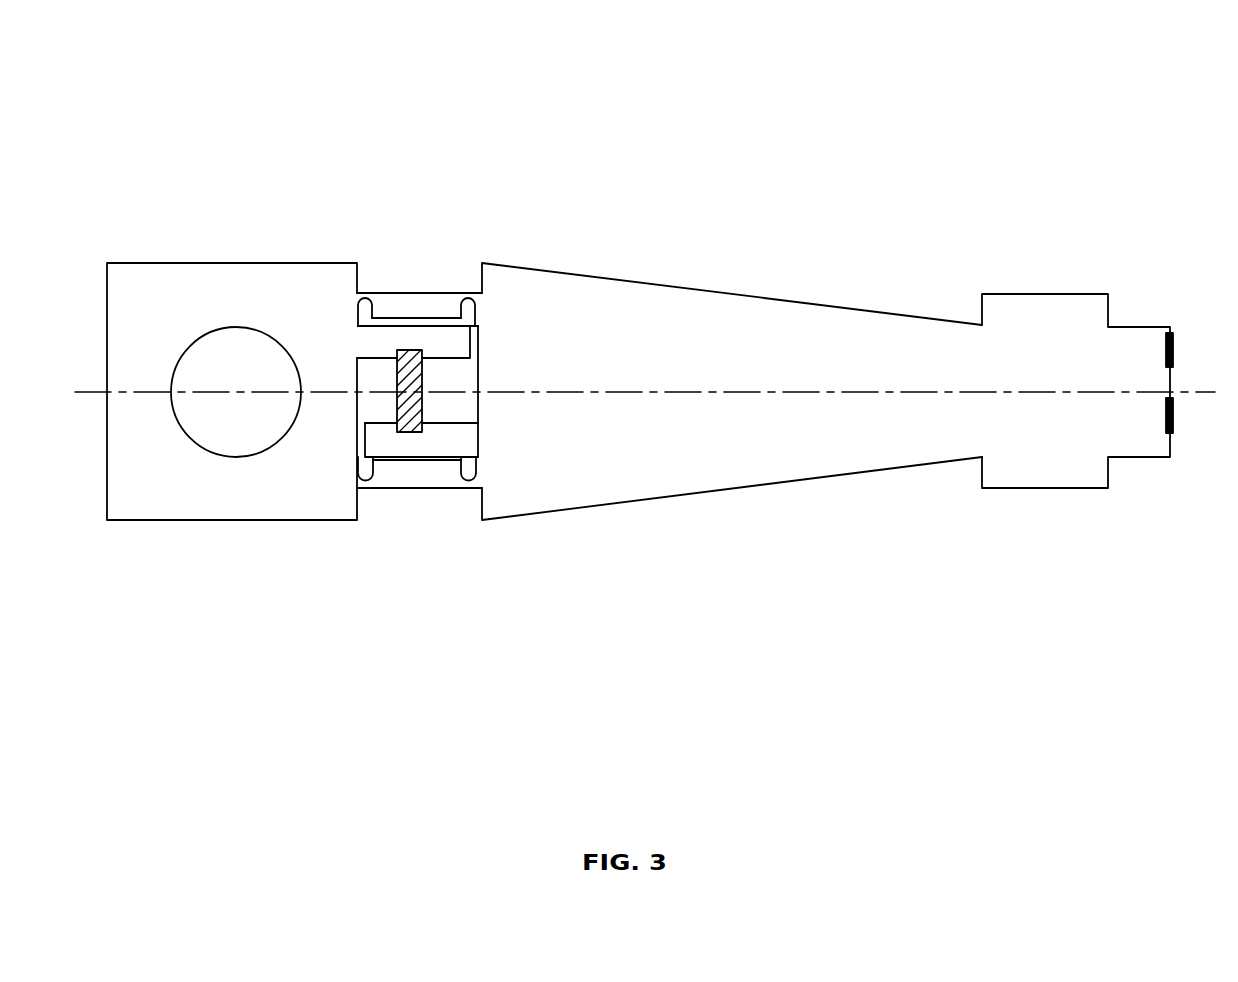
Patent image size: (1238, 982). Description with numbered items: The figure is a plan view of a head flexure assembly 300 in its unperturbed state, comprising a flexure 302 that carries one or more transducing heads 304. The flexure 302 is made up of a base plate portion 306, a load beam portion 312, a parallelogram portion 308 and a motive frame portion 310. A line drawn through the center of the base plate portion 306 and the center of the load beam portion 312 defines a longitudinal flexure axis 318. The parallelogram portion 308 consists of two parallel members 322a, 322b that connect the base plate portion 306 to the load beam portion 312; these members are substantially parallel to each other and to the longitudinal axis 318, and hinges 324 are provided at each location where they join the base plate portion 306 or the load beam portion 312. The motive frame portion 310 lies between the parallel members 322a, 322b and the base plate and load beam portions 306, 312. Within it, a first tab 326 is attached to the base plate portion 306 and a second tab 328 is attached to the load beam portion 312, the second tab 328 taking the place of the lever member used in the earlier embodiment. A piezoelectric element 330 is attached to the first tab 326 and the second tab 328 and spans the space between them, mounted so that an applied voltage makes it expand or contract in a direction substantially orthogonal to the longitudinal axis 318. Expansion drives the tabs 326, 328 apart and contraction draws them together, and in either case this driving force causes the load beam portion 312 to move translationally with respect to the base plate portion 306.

The head flexure assembly 300 is at (977, 131).
The flexure 302 is at (122, 263).
The transducing heads 304 is at (1170, 333).
The base plate portion 306 is at (235, 262).
The parallelogram portion 308 is at (377, 293).
The motive frame portion 310 is at (482, 322).
The load beam portion 312 is at (710, 293).
The longitudinal flexure axis 318 is at (832, 393).
The parallel member 322a is at (398, 293).
The parallel member 322b is at (428, 432).
The hinges 324 is at (358, 302).
The first tab 326 is at (447, 325).
The second tab 328 is at (388, 457).
The piezoelectric element 330 is at (422, 432).